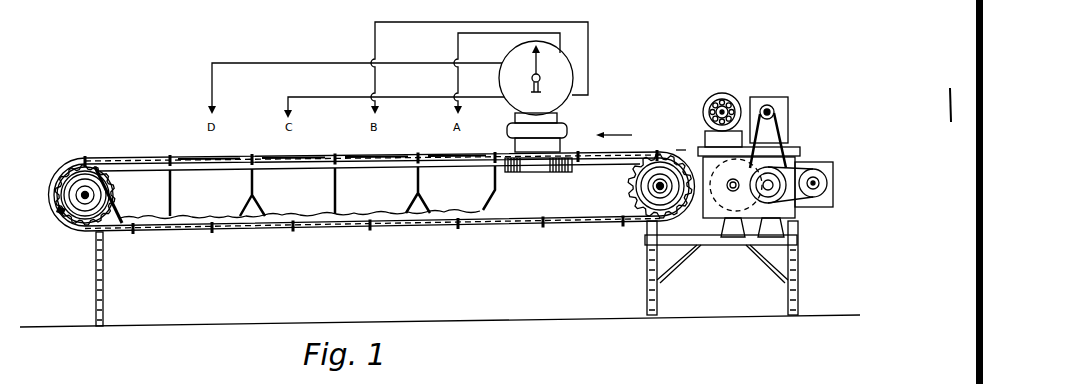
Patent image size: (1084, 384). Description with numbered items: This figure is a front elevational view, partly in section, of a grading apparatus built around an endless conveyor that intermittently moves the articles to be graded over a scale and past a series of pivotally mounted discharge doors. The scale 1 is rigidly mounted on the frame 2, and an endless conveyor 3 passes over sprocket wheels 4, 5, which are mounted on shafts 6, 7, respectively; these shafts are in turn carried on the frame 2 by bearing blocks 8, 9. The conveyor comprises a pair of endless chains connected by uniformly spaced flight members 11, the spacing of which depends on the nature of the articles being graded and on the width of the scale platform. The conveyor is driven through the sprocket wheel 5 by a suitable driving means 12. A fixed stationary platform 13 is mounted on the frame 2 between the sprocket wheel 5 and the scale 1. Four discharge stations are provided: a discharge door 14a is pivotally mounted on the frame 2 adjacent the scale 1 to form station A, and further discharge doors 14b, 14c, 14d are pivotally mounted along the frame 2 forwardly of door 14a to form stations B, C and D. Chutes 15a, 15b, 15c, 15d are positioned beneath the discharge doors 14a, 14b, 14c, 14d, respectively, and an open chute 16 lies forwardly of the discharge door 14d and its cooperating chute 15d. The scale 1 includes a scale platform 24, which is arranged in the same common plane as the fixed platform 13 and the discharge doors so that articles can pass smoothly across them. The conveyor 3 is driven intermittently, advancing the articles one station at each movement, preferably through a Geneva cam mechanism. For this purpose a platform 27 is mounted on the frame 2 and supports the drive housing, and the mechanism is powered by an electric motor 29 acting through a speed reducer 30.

The scale 1 is at (569, 78).
The frame 2 is at (106, 294).
The endless conveyor 3 is at (123, 156).
The sprocket wheel 4 is at (73, 222).
The sprocket wheel 5 is at (643, 222).
The shaft 6 is at (58, 212).
The shaft 7 is at (644, 190).
The bearing block 8 is at (58, 190).
The bearing block 9 is at (680, 152).
The flight members 11 is at (170, 156).
The driving means 12 is at (802, 94).
The fixed stationary platform 13 is at (632, 148).
The discharge door 14a is at (446, 157).
The discharge door 14b is at (366, 158).
The discharge door 14c is at (278, 158).
The discharge door 14d is at (206, 157).
The chute 15a is at (470, 200).
The chute 15b is at (386, 210).
The chute 15c is at (306, 210).
The chute 15d is at (228, 213).
The open chute 16 is at (147, 197).
The scale platform 24 is at (545, 163).
The platform 27 is at (790, 238).
The electric motor 29 is at (718, 93).
The speed reducer 30 is at (778, 97).